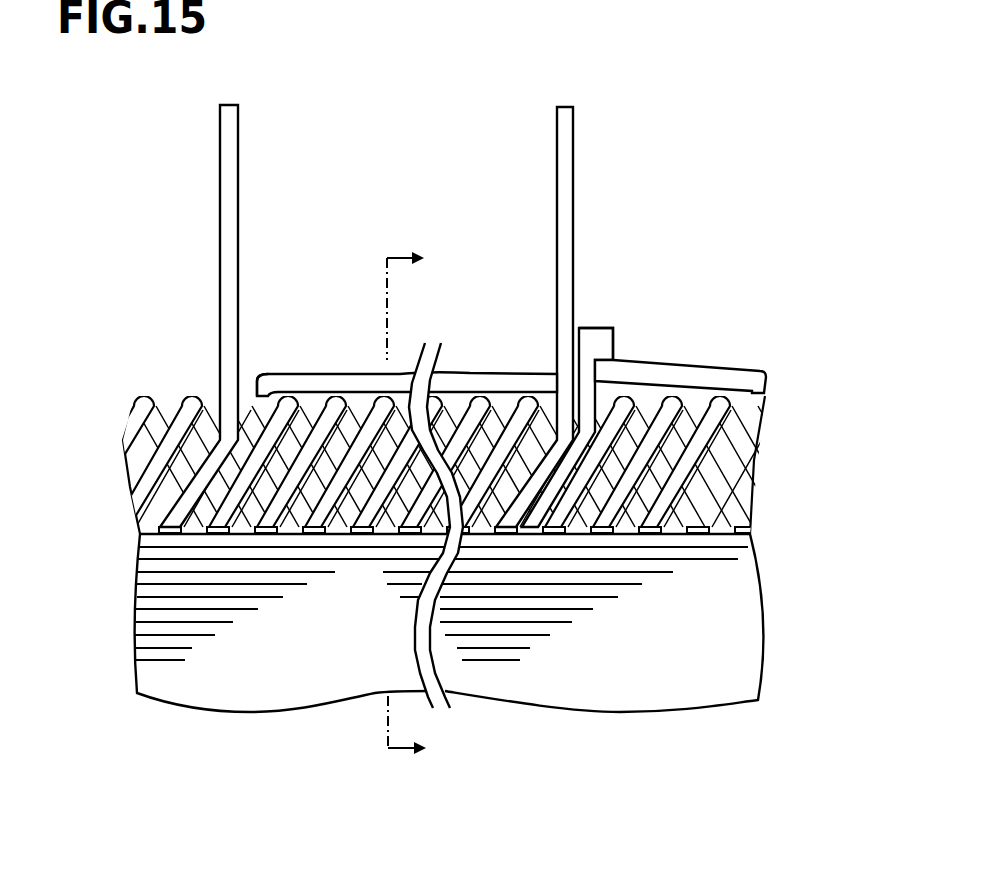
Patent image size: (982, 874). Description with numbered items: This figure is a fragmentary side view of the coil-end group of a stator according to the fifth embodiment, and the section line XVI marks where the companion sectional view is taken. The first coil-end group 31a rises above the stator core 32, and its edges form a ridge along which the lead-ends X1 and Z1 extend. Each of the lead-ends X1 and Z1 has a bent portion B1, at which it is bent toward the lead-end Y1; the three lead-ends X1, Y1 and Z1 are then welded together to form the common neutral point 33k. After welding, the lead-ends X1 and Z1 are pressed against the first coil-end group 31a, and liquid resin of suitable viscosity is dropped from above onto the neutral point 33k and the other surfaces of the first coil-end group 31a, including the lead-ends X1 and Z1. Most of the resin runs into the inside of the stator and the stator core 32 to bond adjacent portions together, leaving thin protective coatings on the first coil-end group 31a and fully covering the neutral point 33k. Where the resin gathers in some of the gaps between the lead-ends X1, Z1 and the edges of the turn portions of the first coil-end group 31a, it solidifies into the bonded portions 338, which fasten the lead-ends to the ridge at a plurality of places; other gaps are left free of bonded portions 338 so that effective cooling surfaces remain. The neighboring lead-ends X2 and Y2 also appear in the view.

The pin electrode X2 is at (239, 168).
The pin electrode Y2 is at (574, 168).
The lead-end Y1 is at (613, 393).
The lead-end X1 is at (520, 384).
The lead-end Z1 is at (747, 378).
The bent portion B1 is at (255, 373).
The common neutral point 33k is at (594, 326).
The bonded portions 338 is at (372, 373).
The first coil-end group 31a is at (765, 427).
The stator core 32 is at (742, 607).
The section line XVI- XVI is at (414, 506).